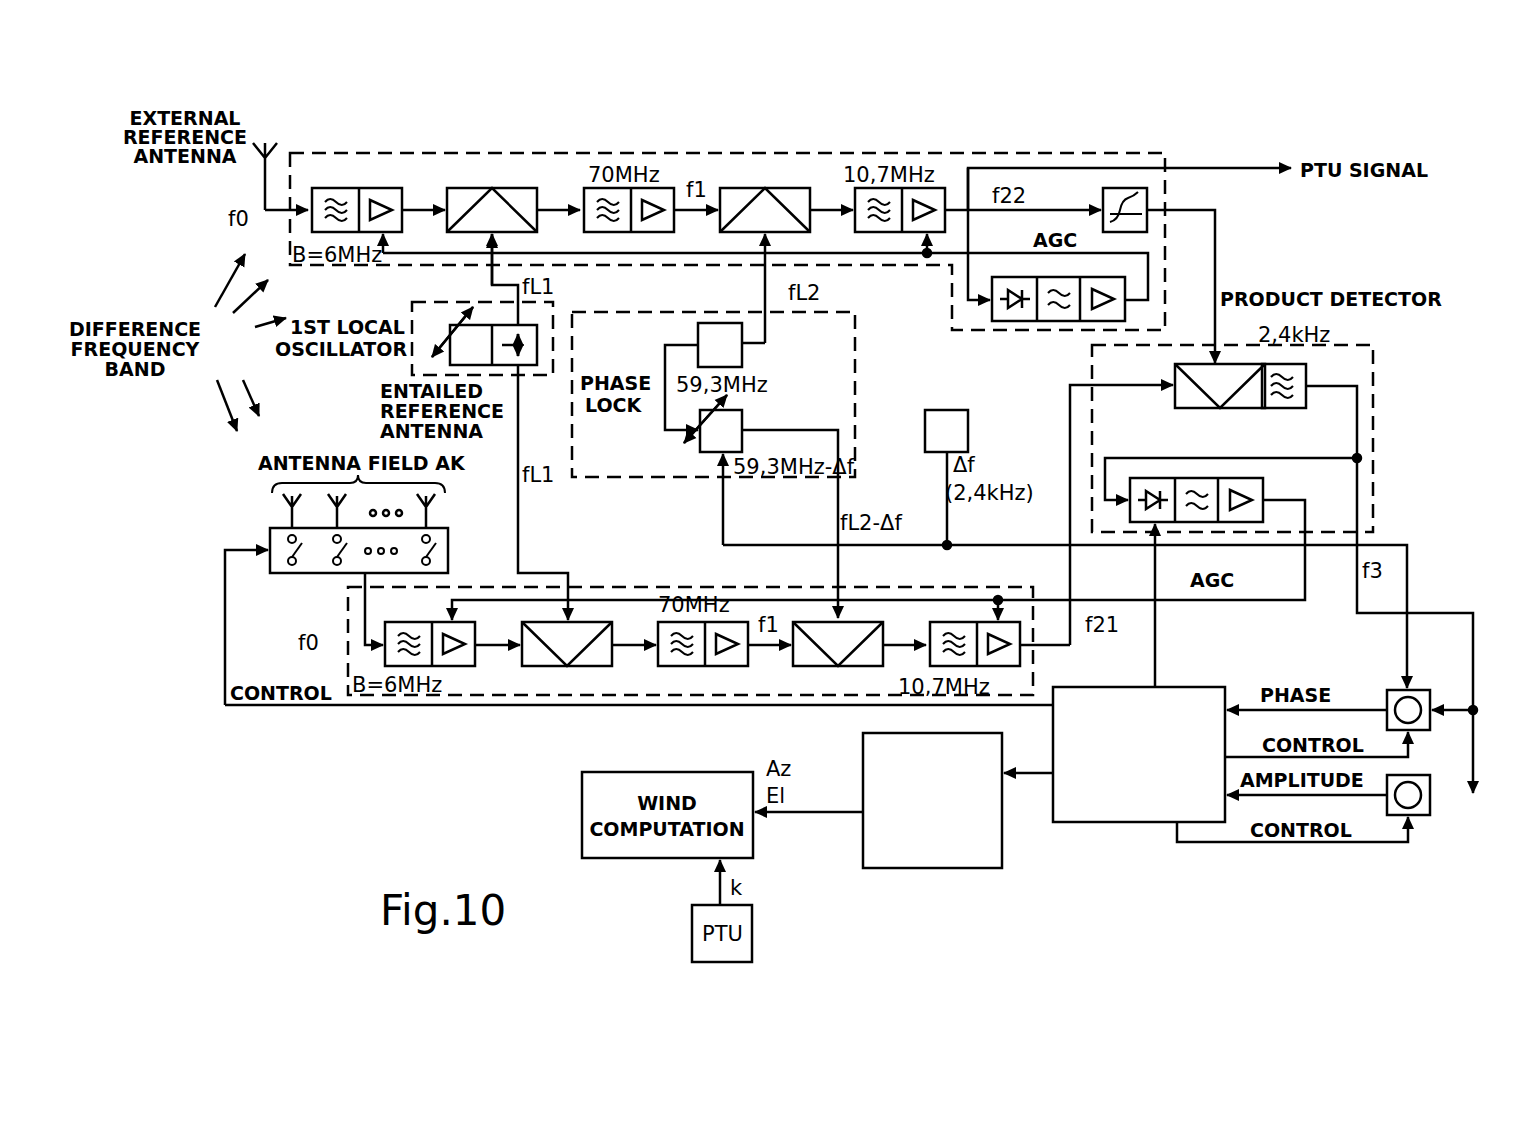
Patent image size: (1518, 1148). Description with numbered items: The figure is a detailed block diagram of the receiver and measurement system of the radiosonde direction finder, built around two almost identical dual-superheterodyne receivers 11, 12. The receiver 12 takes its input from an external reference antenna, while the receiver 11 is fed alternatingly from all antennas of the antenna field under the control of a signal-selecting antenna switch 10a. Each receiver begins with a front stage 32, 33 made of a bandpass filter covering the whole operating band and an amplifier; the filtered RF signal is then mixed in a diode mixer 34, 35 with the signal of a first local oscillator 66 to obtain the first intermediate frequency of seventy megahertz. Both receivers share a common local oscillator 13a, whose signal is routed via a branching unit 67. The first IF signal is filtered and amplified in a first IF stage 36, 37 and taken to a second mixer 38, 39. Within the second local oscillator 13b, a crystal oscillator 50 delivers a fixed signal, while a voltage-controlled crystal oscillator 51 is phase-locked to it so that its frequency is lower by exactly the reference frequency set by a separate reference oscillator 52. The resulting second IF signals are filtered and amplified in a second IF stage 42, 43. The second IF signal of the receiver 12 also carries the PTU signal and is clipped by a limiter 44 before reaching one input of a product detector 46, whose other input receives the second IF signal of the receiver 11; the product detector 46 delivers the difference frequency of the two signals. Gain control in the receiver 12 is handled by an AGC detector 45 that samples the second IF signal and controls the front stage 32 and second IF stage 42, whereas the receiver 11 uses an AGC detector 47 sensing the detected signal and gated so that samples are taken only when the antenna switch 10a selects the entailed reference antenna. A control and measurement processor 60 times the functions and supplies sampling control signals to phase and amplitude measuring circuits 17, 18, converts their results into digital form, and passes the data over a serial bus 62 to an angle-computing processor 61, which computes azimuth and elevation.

The antenna switch 10a is at (448, 548).
The receiver 11 is at (668, 548).
The receiver 12 is at (644, 146).
The local oscillator 13a is at (408, 300).
The second local oscillator 13b is at (863, 336).
The phase measuring circuit 17 is at (1252, 635).
The amplitude measuring circuit 18 is at (1430, 752).
The front stage 32 is at (383, 188).
The front stage 33 is at (455, 668).
The diode mixer 34 is at (470, 188).
The diode mixer 35 is at (565, 668).
The first IF stage 36 is at (655, 188).
The first IF stage 37 is at (690, 668).
The second mixer 38 is at (767, 188).
The second mixer 39 is at (825, 668).
The second IF stage 42 is at (917, 188).
The second IF stage 43 is at (1005, 668).
The limiter 44 is at (1123, 188).
The AGC detector 45 is at (1055, 320).
The product detector 46 is at (1238, 408).
The AGC detector 47 is at (1263, 492).
The crystal oscillator 50 is at (718, 323).
The voltage-controlled crystal oscillator 51 is at (742, 428).
The reference oscillator 52 is at (968, 422).
The control and measurement processor 60 is at (1107, 822).
The angle-computing processor 61 is at (895, 868).
The serial bus 62 is at (1038, 773).
The first local oscillator 66 is at (450, 355).
The branching unit 67 is at (528, 365).